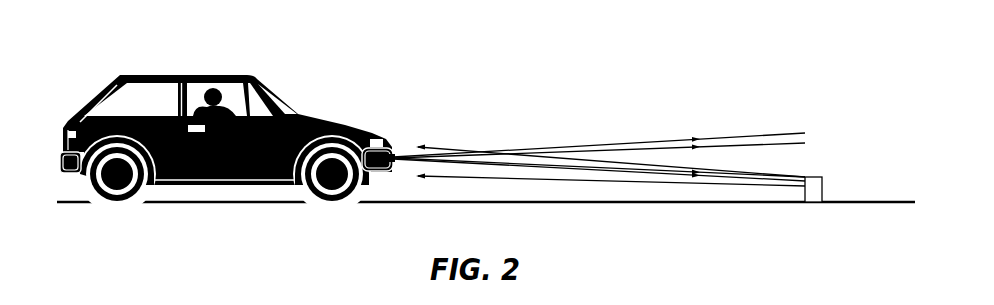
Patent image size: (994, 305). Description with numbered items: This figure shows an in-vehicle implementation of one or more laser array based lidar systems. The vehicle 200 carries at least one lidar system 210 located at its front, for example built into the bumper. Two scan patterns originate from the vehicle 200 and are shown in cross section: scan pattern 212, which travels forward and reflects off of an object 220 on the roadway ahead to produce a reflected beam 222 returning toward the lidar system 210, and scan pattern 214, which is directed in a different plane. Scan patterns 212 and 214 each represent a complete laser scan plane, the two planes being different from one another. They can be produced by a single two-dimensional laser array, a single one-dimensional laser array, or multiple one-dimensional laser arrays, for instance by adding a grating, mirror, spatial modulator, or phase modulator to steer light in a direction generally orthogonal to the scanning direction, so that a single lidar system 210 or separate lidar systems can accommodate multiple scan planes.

The vehicle 200 is at (184, 74).
The lidar system 210 is at (389, 142).
The scan pattern 212 is at (794, 177).
The scan pattern 214 is at (788, 132).
The object 220 is at (823, 186).
The reflected beam 222 is at (449, 146).